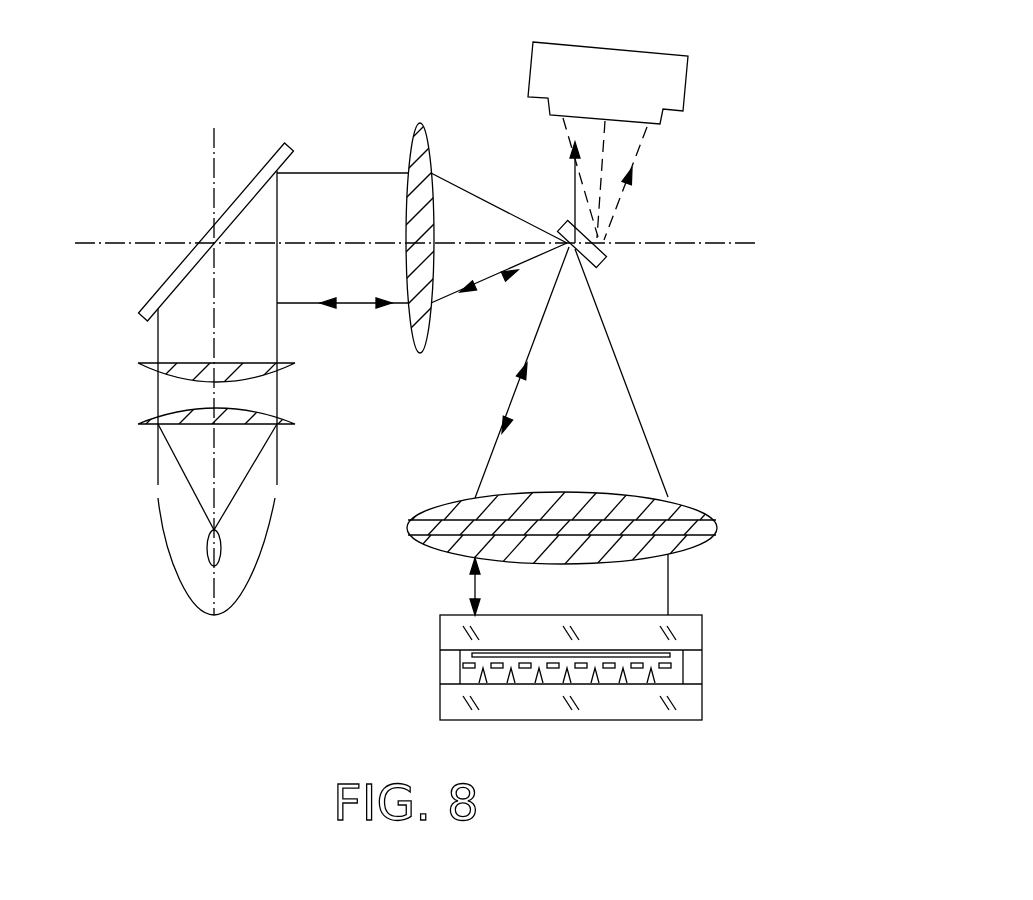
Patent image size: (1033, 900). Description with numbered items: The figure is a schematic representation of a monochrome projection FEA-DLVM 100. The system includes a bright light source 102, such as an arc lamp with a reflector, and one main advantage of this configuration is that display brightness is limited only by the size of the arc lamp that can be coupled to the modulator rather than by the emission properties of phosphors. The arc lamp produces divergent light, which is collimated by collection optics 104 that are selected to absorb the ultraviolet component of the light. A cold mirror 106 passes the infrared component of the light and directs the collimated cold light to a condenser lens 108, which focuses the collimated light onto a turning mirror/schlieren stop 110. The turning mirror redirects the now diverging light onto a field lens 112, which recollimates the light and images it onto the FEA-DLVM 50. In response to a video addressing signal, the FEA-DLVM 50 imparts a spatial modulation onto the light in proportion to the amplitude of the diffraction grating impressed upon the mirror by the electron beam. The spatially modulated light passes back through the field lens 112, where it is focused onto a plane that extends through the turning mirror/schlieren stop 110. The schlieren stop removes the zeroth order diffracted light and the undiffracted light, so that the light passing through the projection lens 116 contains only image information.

The monochrome projection FEA-DLVM 100 is at (770, 501).
The bright light source 102 is at (177, 568).
The collection optics 104 is at (158, 415).
The cold mirror 106 is at (160, 282).
The condenser lens 108 is at (422, 353).
The turning mirror/schlieren stop 110 is at (540, 280).
The field lens 112 is at (432, 510).
The projection lens 116 is at (687, 82).
The FEA-DLVM 50 is at (440, 660).